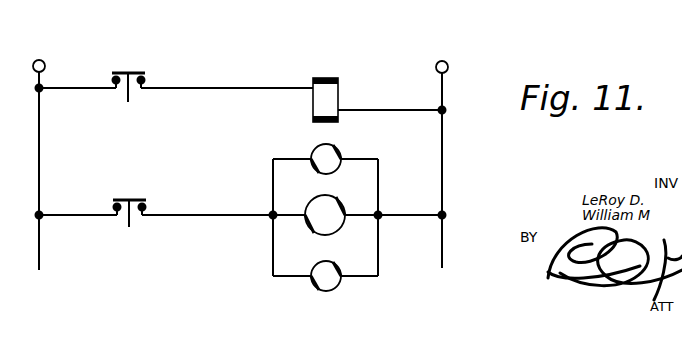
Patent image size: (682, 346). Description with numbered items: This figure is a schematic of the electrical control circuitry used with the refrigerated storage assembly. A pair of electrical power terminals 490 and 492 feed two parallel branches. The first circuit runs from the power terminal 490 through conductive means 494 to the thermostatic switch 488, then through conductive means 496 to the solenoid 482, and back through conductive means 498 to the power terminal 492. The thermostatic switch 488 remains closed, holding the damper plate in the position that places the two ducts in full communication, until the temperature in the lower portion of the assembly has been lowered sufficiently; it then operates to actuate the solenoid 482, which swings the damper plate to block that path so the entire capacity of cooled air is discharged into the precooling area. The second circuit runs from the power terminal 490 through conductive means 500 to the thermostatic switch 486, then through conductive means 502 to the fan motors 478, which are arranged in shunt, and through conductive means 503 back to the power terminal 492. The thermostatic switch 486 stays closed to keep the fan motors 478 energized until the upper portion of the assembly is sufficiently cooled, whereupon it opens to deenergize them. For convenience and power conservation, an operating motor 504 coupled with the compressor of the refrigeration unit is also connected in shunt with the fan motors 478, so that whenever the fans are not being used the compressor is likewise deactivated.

The fan motors 478 is at (334, 165).
The solenoid 482 is at (336, 95).
The thermostatic switch 486 is at (136, 198).
The thermostatic switch 488 is at (137, 71).
The electrical power terminal 490 is at (44, 64).
The electrical power terminal 492 is at (447, 63).
The conductive means 494 is at (83, 89).
The conductive means 496 is at (237, 89).
The conductive means 498 is at (395, 111).
The conductive means 500 is at (88, 217).
The conductive means 502 is at (218, 217).
The conductive means 503 is at (407, 217).
The operating motor 504 is at (311, 191).